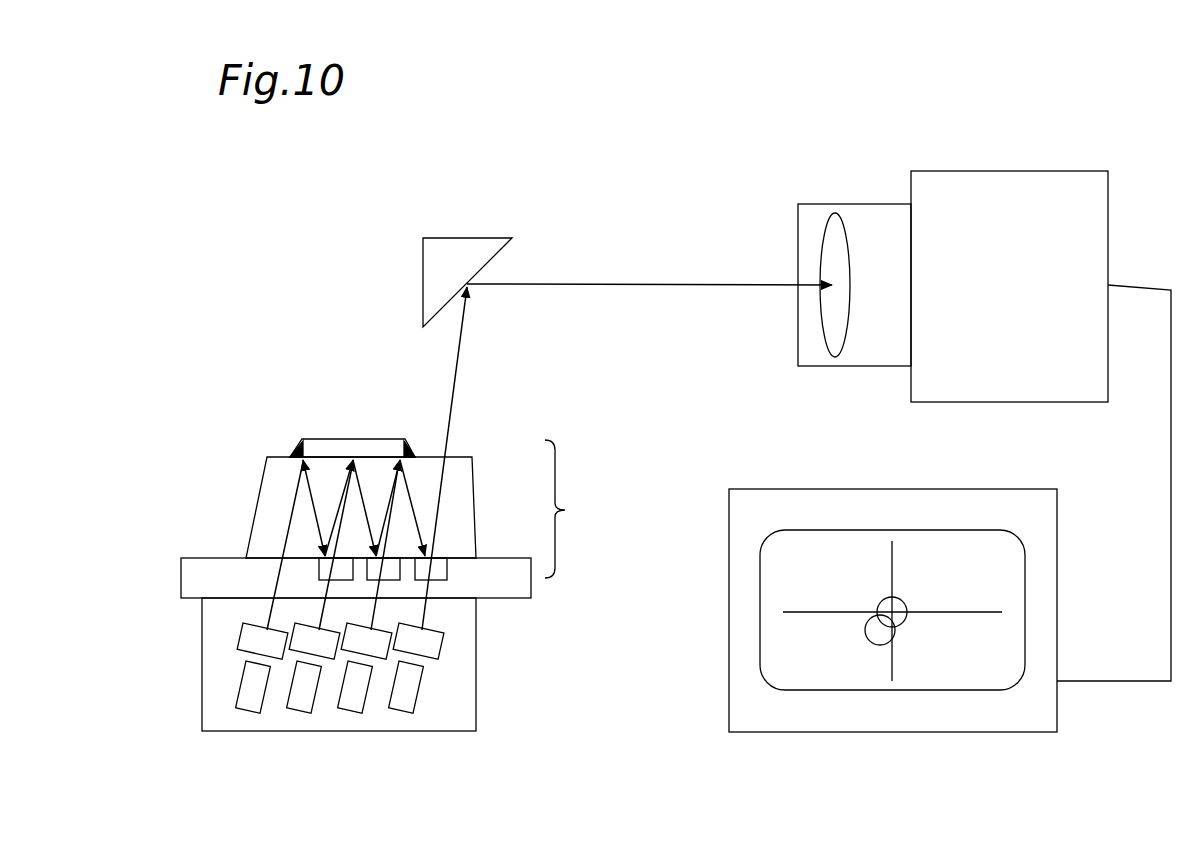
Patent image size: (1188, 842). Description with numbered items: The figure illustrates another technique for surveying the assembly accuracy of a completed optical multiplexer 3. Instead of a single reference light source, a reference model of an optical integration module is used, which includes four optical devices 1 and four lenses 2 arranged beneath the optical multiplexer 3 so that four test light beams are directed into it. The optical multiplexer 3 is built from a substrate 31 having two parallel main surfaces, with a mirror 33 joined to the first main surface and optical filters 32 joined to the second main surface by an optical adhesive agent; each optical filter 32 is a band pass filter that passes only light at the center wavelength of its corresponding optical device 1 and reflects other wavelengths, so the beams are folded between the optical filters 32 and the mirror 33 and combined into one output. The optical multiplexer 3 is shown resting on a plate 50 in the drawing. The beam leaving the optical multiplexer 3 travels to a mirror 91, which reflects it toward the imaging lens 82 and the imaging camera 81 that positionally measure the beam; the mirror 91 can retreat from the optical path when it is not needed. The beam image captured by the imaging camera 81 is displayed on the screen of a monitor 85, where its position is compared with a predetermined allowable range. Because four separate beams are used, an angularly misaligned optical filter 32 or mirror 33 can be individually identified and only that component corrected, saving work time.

The optical device 1 is at (415, 690).
The lens 2 is at (433, 645).
The optical multiplexer 3 is at (566, 509).
The substrate 31 is at (257, 505).
The optical filter 32 is at (443, 571).
The mirror 33 is at (330, 439).
The base plate 50 is at (515, 585).
The imaging camera 81 is at (1003, 171).
The imaging lens 82 is at (852, 204).
The monitor 85 is at (748, 706).
The mirror 91 is at (460, 237).